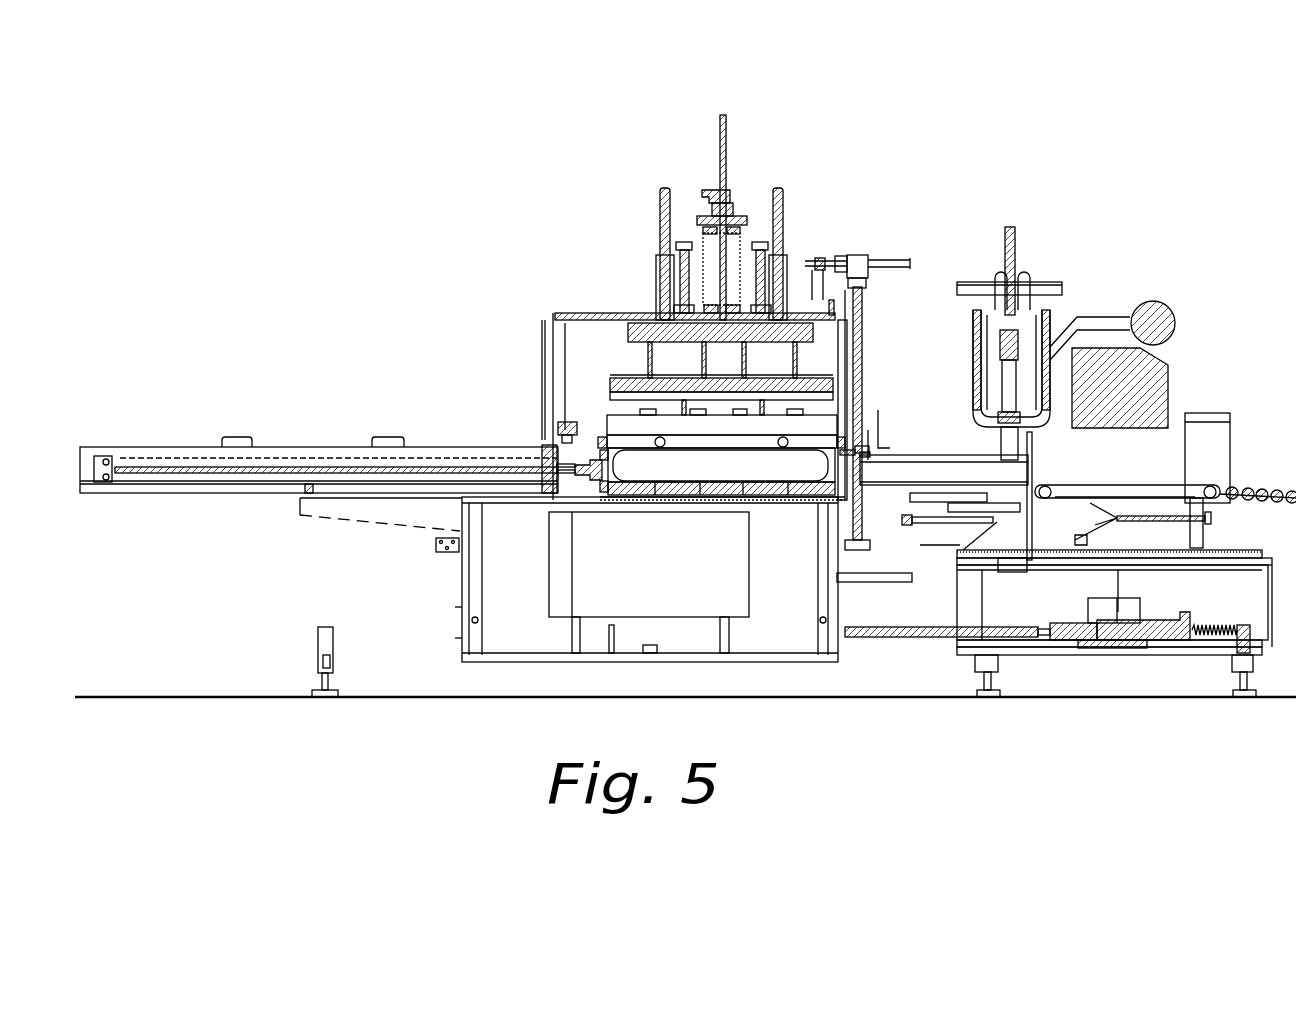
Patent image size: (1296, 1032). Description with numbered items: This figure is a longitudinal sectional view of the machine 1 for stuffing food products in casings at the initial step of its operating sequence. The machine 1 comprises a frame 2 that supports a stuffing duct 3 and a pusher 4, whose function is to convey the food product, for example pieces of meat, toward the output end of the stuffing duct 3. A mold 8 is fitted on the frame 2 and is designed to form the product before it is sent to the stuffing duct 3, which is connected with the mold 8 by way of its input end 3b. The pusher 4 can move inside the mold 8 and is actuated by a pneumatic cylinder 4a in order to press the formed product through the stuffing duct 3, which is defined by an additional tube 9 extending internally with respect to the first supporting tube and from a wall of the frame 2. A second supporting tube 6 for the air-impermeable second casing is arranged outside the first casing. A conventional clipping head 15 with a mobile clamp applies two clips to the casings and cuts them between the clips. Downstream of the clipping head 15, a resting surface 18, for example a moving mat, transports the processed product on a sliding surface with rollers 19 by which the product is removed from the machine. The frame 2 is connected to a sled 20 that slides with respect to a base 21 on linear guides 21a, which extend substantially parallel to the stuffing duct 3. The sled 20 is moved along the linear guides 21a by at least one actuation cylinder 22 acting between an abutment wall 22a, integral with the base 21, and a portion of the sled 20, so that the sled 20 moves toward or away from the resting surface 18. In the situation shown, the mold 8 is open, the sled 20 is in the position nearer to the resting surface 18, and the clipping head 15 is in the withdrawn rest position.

The machine for stuffing food products in casings 1 is at (348, 257).
The frame 2 is at (782, 498).
The stuffing duct 3 is at (945, 468).
The input end 3b is at (840, 472).
The pusher 4 is at (586, 483).
The pneumatic cylinder 4a is at (290, 452).
The second supporting tube 6 is at (913, 455).
The mold 8 is at (630, 445).
The additional tube 9 is at (993, 470).
The clipping head 15 is at (1050, 318).
The resting surface 18 is at (1170, 480).
The rollers 19 is at (1263, 487).
The sled 20 is at (510, 632).
The base 21 is at (325, 660).
The linear guides 21a is at (378, 643).
The actuation cylinder 22 is at (880, 583).
The abutment wall 22a is at (957, 595).